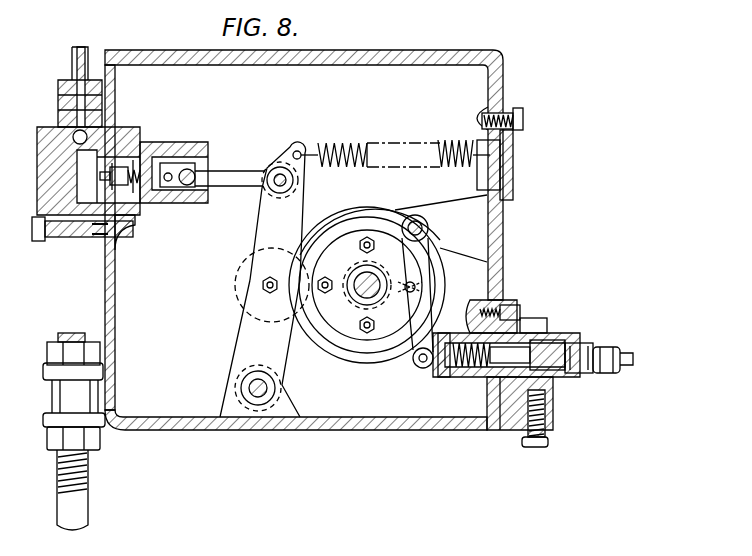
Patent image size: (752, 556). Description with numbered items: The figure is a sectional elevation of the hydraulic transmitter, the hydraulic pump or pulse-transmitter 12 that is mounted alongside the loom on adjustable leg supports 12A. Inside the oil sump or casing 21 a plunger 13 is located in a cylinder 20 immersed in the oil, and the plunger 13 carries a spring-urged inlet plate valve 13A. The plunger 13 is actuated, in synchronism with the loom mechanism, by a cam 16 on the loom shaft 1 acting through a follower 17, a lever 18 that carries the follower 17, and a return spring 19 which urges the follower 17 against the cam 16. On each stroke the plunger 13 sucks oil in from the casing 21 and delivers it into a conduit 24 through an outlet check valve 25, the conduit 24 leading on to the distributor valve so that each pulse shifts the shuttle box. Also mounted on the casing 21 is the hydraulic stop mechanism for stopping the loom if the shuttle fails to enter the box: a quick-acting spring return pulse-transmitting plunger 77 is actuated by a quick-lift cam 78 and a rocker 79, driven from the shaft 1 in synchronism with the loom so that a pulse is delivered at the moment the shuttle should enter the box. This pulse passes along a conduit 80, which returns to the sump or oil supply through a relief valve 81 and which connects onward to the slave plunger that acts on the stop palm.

The loom shaft 1 is at (363, 302).
The hydraulic pump or pulse-transmitter 12 is at (109, 305).
The adjustable leg supports 12A is at (87, 481).
The plunger 13 is at (105, 240).
The spring-urged inlet plate valve 13A is at (140, 162).
The cam 16 is at (330, 235).
The follower 17 is at (238, 292).
The lever 18 is at (248, 340).
The return spring 19 is at (395, 143).
The cylinder 20 is at (186, 210).
The oil sump or casing 21 is at (112, 333).
The conduit 24 is at (76, 60).
The outlet check valve 25 is at (86, 134).
The quick-acting spring return pulse-transmitting plunger 77 is at (485, 357).
The quick-lift cam 78 is at (389, 298).
The rocker 79 is at (427, 323).
The conduit 80 is at (622, 348).
The relief valve 81 is at (553, 383).